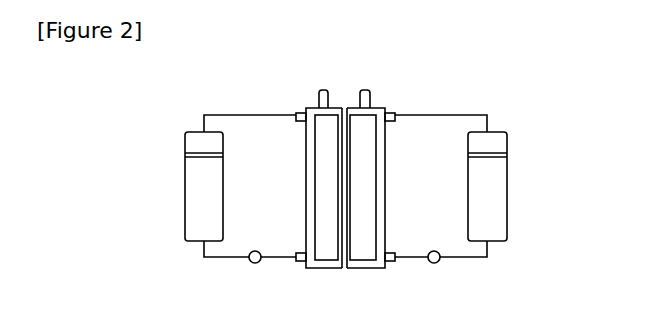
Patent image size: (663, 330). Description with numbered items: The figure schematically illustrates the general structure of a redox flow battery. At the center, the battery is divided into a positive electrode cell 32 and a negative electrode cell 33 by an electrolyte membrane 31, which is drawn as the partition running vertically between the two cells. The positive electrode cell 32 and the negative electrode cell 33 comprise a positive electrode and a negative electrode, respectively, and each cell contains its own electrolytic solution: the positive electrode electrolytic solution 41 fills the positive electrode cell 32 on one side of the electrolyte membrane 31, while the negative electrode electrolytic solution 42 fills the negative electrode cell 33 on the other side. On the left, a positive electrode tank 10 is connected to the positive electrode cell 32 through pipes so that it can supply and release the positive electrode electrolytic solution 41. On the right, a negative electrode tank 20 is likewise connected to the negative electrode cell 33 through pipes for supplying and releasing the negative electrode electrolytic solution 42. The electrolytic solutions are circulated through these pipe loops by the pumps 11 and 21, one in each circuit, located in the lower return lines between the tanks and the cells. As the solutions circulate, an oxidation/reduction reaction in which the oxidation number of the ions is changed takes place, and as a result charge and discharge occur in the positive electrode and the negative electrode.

The positive electrode tank 10 is at (185, 196).
The pump 11 is at (255, 263).
The negative electrode tank 20 is at (507, 196).
The pump 21 is at (434, 263).
The electrolyte membrane 31 is at (344, 107).
The positive electrode cell 32 is at (323, 268).
The negative electrode cell 33 is at (363, 268).
The positive electrode electrolytic solution 41 is at (333, 230).
The negative electrode electrolytic solution 42 is at (386, 195).